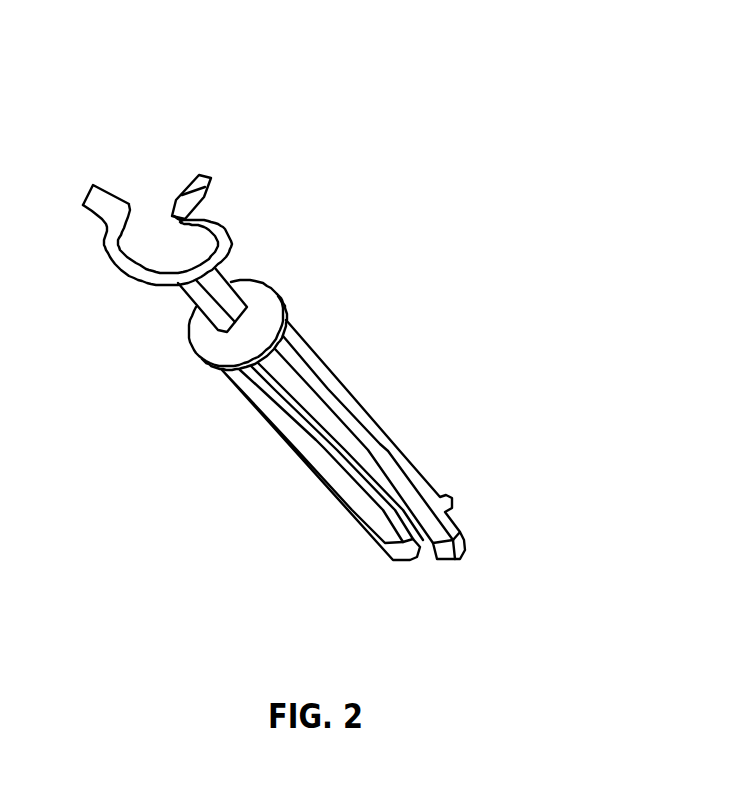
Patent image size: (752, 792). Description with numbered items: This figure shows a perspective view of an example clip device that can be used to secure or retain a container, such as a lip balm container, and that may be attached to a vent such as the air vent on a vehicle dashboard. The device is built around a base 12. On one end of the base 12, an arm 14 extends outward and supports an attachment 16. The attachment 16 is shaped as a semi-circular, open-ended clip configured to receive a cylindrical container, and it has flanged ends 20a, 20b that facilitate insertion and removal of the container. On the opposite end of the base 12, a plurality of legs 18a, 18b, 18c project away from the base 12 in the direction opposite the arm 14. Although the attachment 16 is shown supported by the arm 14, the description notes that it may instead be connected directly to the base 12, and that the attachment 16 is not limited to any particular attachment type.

The base 12 is at (281, 297).
The arm 14 is at (192, 299).
The attachment 16 is at (227, 231).
The leg 18a is at (421, 468).
The leg 18b is at (352, 512).
The leg 18c is at (468, 552).
The flanged end 20a is at (85, 183).
The flanged end 20b is at (196, 177).